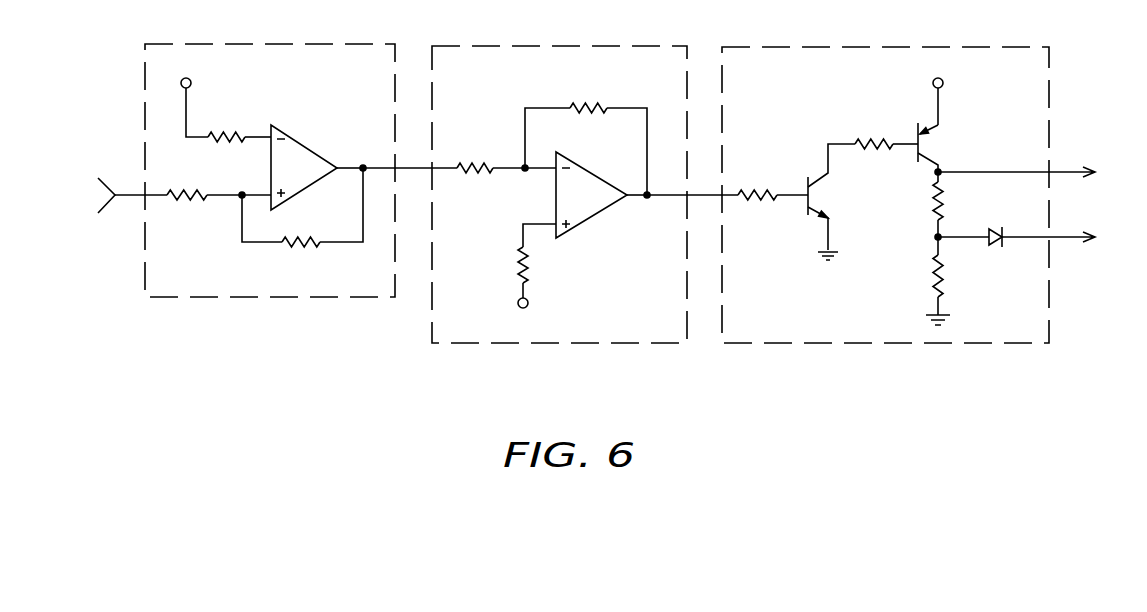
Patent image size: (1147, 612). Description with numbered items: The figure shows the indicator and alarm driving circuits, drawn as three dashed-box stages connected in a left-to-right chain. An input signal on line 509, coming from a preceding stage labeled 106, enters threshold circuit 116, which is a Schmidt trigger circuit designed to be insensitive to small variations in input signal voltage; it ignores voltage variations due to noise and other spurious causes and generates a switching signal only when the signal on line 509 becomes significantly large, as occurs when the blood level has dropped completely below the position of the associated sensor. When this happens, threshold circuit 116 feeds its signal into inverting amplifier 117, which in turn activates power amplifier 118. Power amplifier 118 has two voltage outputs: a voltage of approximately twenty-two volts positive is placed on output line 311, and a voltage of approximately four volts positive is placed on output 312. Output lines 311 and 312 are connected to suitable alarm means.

The source stage (FROM 106) 106 is at (76, 197).
The line 509 is at (128, 193).
The threshold circuit 116 is at (270, 44).
The inverting amplifier 117 is at (523, 46).
The power amplifier 118 is at (975, 49).
The output line 311 is at (1060, 172).
The output 312 is at (1063, 240).